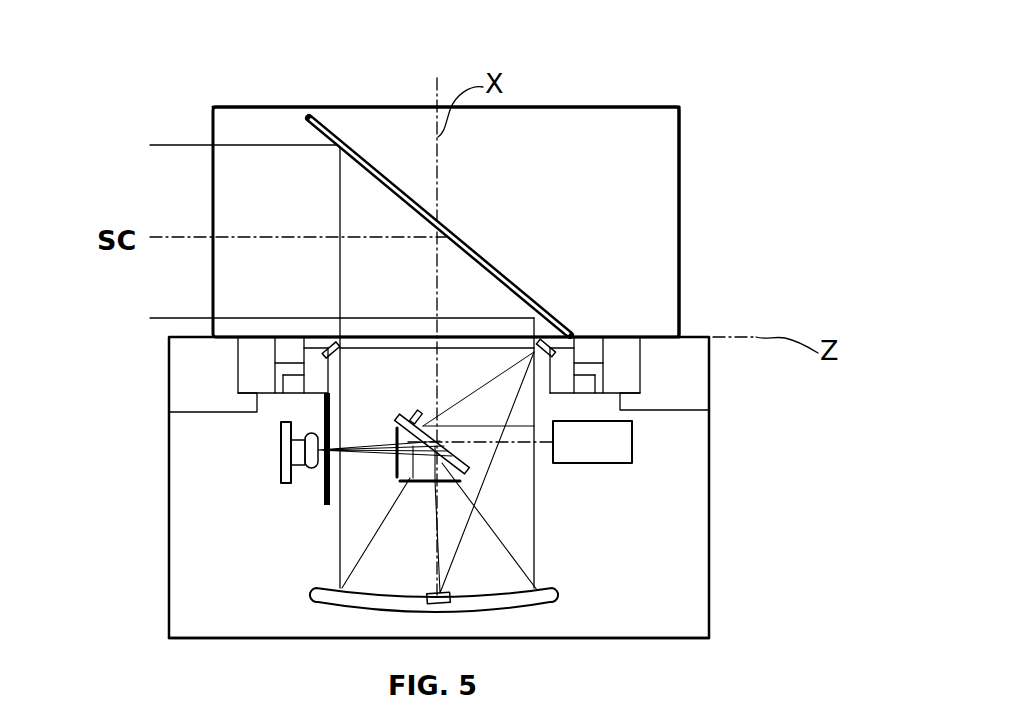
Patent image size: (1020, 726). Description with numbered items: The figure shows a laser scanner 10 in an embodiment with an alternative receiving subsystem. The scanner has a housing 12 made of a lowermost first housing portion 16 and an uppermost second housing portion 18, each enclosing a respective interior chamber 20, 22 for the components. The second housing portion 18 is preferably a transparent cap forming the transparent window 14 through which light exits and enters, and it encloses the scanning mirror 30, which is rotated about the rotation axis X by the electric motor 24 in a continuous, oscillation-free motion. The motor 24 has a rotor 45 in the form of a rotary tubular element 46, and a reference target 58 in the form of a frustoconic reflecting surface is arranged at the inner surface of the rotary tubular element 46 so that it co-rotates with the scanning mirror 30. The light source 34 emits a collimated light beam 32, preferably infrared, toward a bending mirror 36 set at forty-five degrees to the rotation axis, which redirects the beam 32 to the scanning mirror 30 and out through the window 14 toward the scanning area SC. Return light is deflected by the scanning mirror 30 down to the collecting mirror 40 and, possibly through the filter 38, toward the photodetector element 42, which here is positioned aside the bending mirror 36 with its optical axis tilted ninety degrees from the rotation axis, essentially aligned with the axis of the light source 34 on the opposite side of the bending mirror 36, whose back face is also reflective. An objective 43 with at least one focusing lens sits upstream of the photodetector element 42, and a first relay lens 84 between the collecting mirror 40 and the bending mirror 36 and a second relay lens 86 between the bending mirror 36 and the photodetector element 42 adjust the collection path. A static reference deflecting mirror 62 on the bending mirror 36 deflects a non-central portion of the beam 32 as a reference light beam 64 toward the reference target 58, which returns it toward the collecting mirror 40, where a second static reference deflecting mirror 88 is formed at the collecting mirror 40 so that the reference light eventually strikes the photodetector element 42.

The laser scanner 10 is at (150, 85).
The housing 12 is at (742, 313).
The transparent window 14 is at (682, 195).
The first housing portion 16 is at (712, 542).
The second housing portion 18 is at (611, 102).
The interior chamber 20 is at (695, 614).
The interior chamber 22 is at (662, 141).
The electric motor 24 is at (670, 424).
The scanning mirror 30 is at (486, 242).
The light beam 32 is at (268, 237).
The light source 34 is at (622, 443).
The bending mirror 36 is at (472, 470).
The filter 38 is at (326, 505).
The collecting mirror 40 is at (320, 597).
The photodetector element 42 is at (295, 453).
The objective 43 is at (313, 462).
The rotor 45 is at (563, 368).
The rotary tubular element 46 is at (584, 384).
The reference target 58 is at (562, 333).
The static reference deflecting mirror 62 is at (419, 412).
The reference light beam 64 is at (458, 402).
The first relay lens 84 is at (444, 483).
The second relay lens 86 is at (394, 468).
The second static reference deflecting mirror 88 is at (451, 603).